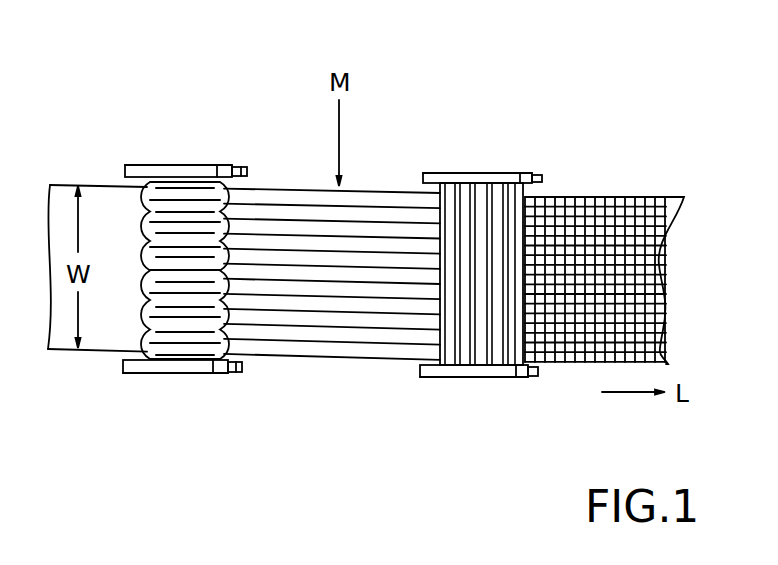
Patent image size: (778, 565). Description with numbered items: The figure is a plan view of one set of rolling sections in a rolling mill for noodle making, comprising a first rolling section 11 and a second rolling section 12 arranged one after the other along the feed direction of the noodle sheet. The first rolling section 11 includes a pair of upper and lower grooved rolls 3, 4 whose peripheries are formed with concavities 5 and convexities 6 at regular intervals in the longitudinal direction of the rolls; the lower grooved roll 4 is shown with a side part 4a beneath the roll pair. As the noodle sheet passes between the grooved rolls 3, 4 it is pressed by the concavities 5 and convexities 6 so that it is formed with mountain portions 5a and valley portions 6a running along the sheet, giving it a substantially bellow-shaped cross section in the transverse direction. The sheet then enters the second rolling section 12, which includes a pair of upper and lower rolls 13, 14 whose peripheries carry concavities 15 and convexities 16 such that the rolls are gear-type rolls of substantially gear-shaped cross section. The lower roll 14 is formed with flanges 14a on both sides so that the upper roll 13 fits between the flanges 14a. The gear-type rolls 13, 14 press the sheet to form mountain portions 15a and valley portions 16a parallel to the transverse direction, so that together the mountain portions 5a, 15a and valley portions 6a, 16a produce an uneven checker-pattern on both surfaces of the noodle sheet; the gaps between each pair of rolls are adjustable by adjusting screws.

The upper grooved roll 3 is at (163, 257).
The lower grooved roll 4 is at (153, 308).
The roller shaft 4a is at (163, 373).
The concavities 5 is at (244, 268).
The mountain portions 5a is at (365, 228).
The convexities 6 is at (140, 327).
The valley portions 6a is at (285, 212).
The first rolling section 11 is at (182, 93).
The second rolling section 12 is at (481, 77).
The upper gear-type roll 13 is at (521, 257).
The lower gear-type roll 14 is at (476, 257).
The flanges 14a is at (440, 378).
The concavities 15 is at (468, 190).
The mountain portions 15a is at (578, 215).
The convexities 16 is at (480, 197).
The valley portions 16a is at (563, 215).